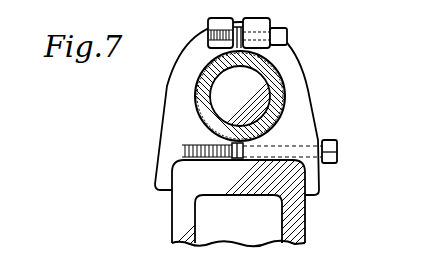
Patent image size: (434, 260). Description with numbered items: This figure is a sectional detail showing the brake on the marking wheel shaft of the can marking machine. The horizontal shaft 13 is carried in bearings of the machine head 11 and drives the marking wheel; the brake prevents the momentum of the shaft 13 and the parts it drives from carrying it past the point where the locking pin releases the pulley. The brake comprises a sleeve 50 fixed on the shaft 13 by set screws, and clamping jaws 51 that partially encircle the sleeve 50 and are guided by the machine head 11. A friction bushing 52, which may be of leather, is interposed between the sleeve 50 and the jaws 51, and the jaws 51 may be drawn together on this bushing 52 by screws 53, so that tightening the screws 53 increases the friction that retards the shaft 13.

The machine head 11 is at (277, 130).
The horizontal shaft 13 is at (213, 90).
The sleeve 50 is at (278, 82).
The clamping jaws 51 is at (237, 108).
The friction bushing 52 is at (285, 108).
The screws 53 is at (337, 152).